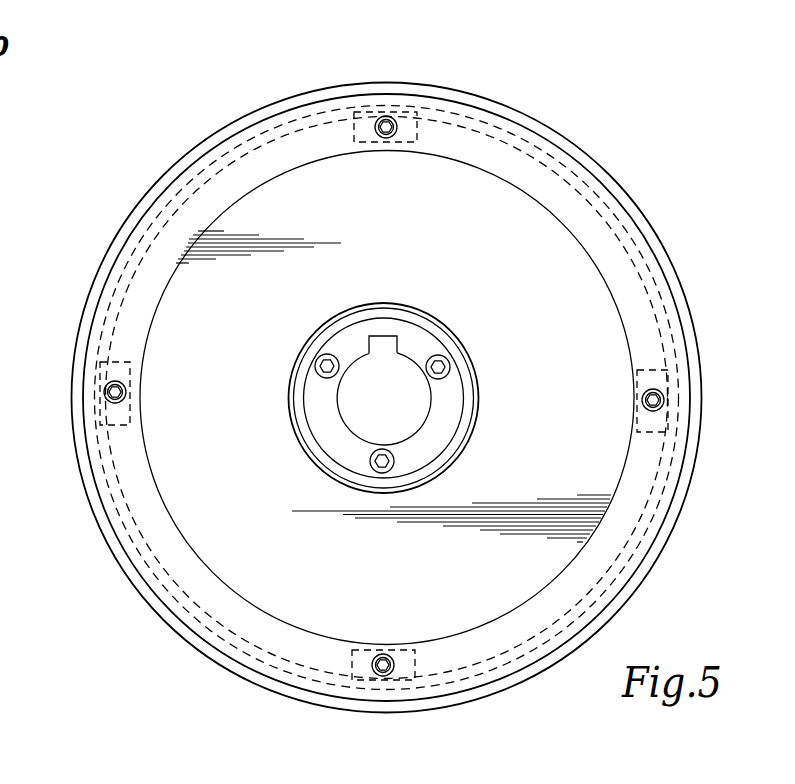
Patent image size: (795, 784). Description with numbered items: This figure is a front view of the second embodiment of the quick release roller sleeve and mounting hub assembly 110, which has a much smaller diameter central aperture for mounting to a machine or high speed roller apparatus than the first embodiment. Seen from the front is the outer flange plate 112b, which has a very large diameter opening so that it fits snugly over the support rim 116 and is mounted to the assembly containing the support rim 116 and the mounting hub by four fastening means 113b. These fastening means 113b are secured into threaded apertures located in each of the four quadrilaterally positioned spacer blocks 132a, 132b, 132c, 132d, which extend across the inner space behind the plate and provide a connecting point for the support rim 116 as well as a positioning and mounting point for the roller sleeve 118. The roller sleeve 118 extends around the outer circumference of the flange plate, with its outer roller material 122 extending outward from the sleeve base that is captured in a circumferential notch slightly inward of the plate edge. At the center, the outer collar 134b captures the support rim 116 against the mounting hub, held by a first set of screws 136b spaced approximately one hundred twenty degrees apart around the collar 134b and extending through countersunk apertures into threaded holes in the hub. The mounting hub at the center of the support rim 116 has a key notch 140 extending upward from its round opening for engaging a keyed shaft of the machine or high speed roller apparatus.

The quick release roller sleeve and mounting hub assembly 110 is at (205, 96).
The outer flange plate 112b is at (625, 280).
The fastening means 113b is at (385, 132).
The support rim 116 is at (555, 228).
The roller sleeve 118 is at (537, 140).
The outer roller material 122 is at (473, 98).
The spacer block 132a is at (402, 122).
The spacer block 132b is at (657, 425).
The spacer block 132c is at (400, 675).
The spacer block 132d is at (110, 410).
The outer collar 134b is at (420, 335).
The screws 136b is at (440, 367).
The key notch 140 is at (378, 345).